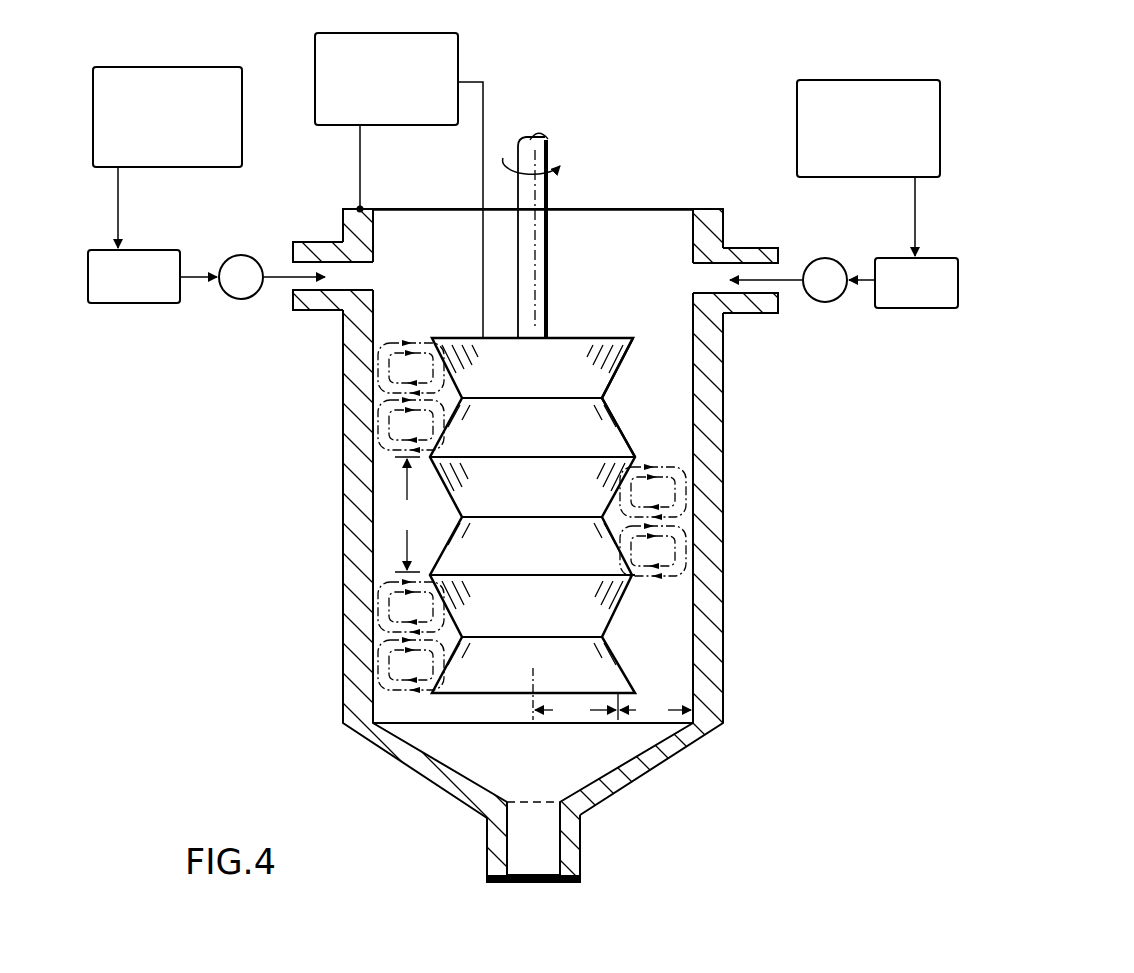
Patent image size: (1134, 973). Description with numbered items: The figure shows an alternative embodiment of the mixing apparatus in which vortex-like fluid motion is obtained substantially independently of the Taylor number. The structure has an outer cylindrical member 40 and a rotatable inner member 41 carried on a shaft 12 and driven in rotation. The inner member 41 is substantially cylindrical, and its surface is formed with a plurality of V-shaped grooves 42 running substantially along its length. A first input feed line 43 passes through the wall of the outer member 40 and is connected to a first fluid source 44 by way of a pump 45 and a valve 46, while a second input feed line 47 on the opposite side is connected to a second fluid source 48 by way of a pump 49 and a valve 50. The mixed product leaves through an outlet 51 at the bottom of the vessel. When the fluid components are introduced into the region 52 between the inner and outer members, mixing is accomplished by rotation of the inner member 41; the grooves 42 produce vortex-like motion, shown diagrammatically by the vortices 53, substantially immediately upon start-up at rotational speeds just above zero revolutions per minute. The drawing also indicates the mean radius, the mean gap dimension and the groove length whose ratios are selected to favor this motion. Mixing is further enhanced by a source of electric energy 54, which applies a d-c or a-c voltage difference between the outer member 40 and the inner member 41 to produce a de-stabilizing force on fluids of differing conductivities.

The rotor shaft 12 is at (550, 293).
The outer cylindrical member 40 is at (718, 648).
The rotatable inner member 41 is at (540, 434).
The V-shaped grooves 42 is at (606, 398).
The first input feed line 43 is at (303, 311).
The first fluid source 44 is at (195, 67).
The pump 45 is at (153, 250).
The valve 46 is at (240, 255).
The second input feed line 47 is at (760, 252).
The second fluid source 48 is at (797, 152).
The pump 49 is at (892, 258).
The valve 50 is at (828, 258).
The outlet neck 51 is at (495, 843).
The region between inner and outer members 52 is at (660, 350).
The vortices 53 is at (385, 422).
The source of electric energy 54 is at (458, 68).